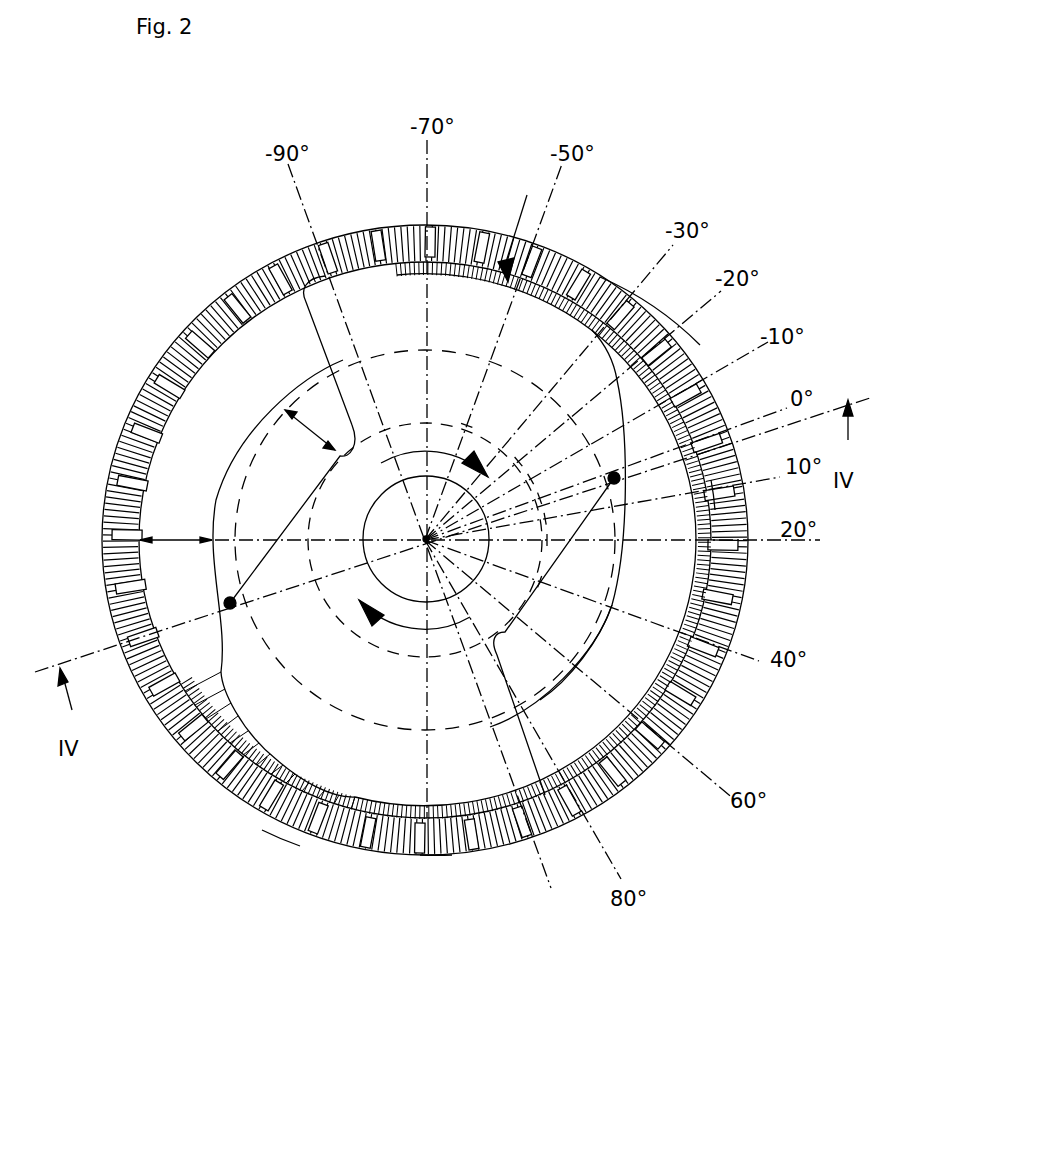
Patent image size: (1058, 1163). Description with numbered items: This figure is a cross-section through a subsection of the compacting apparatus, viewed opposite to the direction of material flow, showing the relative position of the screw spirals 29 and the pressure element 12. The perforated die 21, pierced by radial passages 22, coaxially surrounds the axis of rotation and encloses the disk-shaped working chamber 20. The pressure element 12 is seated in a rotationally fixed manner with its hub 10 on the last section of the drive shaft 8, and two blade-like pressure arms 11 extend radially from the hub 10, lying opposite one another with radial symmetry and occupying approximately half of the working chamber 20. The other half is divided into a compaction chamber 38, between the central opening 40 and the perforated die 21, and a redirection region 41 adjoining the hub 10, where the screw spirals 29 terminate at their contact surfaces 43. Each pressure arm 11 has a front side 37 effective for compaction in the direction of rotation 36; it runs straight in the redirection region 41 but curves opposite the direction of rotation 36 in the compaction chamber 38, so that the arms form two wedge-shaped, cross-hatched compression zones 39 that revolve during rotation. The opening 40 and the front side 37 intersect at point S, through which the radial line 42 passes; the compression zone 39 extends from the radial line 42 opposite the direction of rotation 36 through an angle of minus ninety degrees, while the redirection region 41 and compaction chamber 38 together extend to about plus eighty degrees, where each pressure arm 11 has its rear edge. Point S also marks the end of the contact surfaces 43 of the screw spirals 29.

The drive shaft 8 is at (416, 578).
The hub 10 is at (500, 445).
The pressure arms 11 is at (400, 280).
The pressure element 12 is at (517, 225).
The working chamber 20 is at (246, 496).
The perforated die 21 is at (262, 830).
The radial passages 22 is at (452, 855).
The screw spirals 29 is at (598, 572).
The direction of rotation 36 is at (410, 455).
The front side 37 is at (672, 356).
The compaction chamber 38 is at (205, 540).
The compression zones 39 is at (578, 262).
The central opening 40 is at (262, 292).
The redirection region 41 is at (287, 418).
The radial line 42 is at (736, 430).
The contact surfaces 43 is at (621, 624).